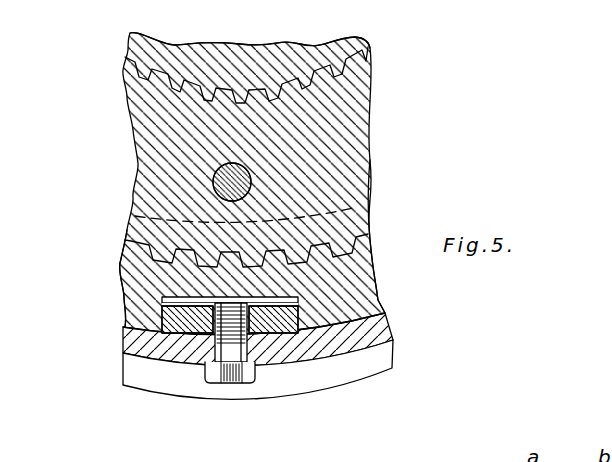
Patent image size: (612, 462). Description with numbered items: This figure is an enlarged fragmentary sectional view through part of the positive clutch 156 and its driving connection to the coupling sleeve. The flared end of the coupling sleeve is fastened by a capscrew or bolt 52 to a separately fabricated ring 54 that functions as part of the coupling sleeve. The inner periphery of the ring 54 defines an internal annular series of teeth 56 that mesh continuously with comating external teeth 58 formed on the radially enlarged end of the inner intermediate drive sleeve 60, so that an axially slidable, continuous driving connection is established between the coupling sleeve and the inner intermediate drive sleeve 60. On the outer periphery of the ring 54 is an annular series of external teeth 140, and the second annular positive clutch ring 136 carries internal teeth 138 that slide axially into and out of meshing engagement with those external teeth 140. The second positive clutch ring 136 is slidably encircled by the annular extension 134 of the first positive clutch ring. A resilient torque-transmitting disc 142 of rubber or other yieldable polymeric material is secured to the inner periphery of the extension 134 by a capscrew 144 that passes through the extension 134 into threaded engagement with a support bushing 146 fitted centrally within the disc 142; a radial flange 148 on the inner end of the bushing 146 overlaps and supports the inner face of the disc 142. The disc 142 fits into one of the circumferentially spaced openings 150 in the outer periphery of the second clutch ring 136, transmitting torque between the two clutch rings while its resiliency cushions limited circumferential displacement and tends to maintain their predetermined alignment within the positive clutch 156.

The capscrews or bolts 52 is at (248, 173).
The ring 54 is at (150, 153).
The internal teeth 56 is at (403, 67).
The external teeth 58 is at (352, 66).
The inner intermediate drive sleeve 60 is at (138, 50).
The annular extension 134 is at (298, 357).
The second annular positive clutch ring 136 is at (130, 284).
The internal teeth 138 is at (353, 210).
The external teeth 140 is at (167, 262).
The resilient torque-transmitting discs 142 is at (163, 321).
The capscrews 144 is at (222, 383).
The support bushings 146 is at (165, 356).
The radial flanges 148 is at (255, 298).
The openings 150 is at (298, 332).
The positive clutch 156 is at (374, 228).